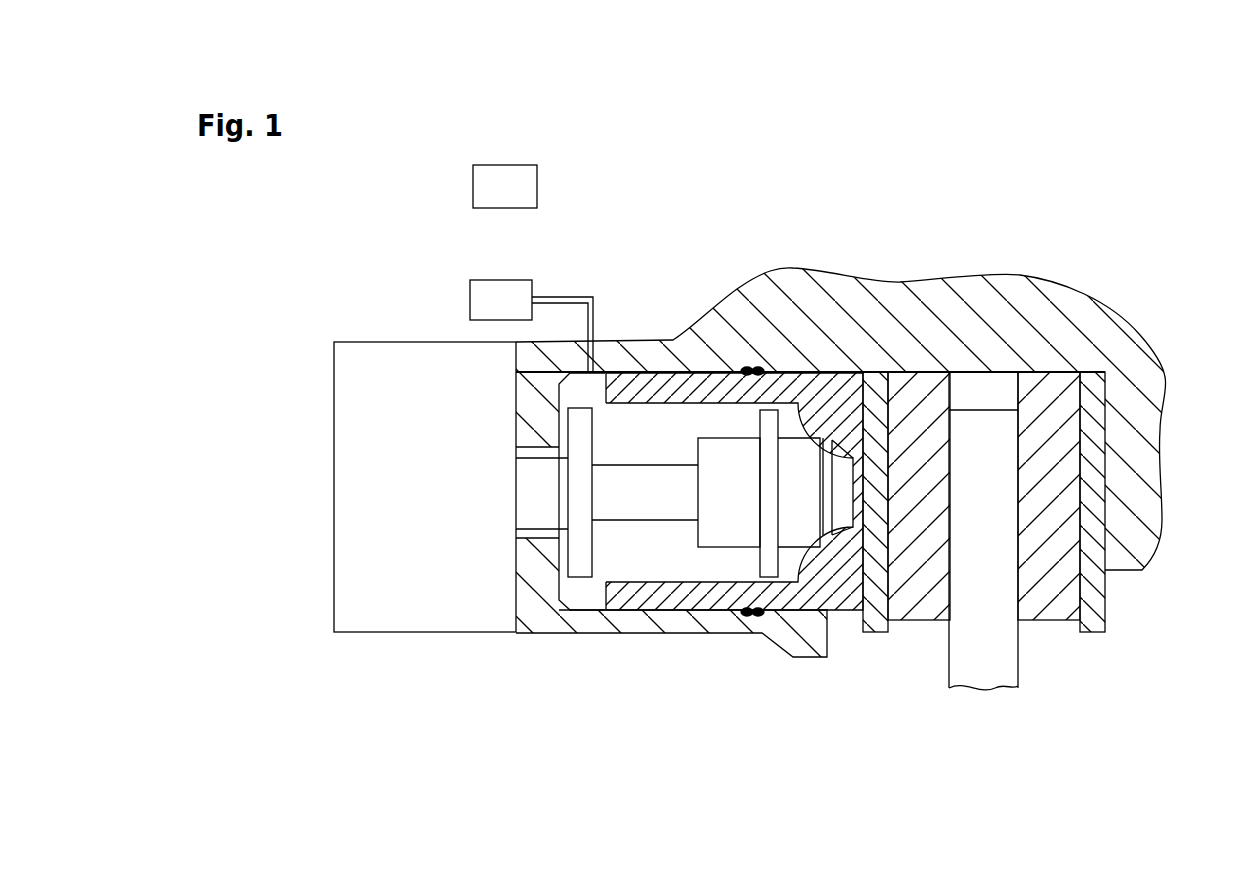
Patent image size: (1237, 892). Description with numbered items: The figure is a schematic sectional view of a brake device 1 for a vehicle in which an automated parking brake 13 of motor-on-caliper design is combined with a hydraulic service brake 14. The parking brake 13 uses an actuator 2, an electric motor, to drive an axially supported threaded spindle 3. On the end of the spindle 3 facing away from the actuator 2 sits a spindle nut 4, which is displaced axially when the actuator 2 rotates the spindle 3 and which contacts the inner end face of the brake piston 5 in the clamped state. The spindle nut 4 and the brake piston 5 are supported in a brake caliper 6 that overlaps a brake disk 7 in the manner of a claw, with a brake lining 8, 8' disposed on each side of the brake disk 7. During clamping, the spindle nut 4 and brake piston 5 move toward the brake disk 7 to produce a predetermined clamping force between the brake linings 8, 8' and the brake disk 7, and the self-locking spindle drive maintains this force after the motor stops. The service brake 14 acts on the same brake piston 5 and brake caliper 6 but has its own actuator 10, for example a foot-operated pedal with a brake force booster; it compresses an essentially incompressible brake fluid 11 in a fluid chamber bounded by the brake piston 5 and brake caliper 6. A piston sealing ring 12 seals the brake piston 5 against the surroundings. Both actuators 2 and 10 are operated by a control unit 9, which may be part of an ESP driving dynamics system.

The brake device 1 is at (1131, 239).
The actuator 2 is at (382, 338).
The spindle 3 is at (680, 503).
The spindle nut 4 is at (727, 517).
The brake piston 5 is at (633, 600).
The brake caliper 6 is at (891, 290).
The brake disk 7 is at (983, 672).
The brake lining 8 is at (906, 535).
The brake lining 8' is at (1061, 536).
The control unit 9 is at (551, 183).
The actuator 10 is at (538, 278).
The brake fluid 11 is at (572, 598).
The piston sealing ring 12 is at (750, 614).
The automated parking brake 13 is at (429, 661).
The service brake 14 is at (636, 221).